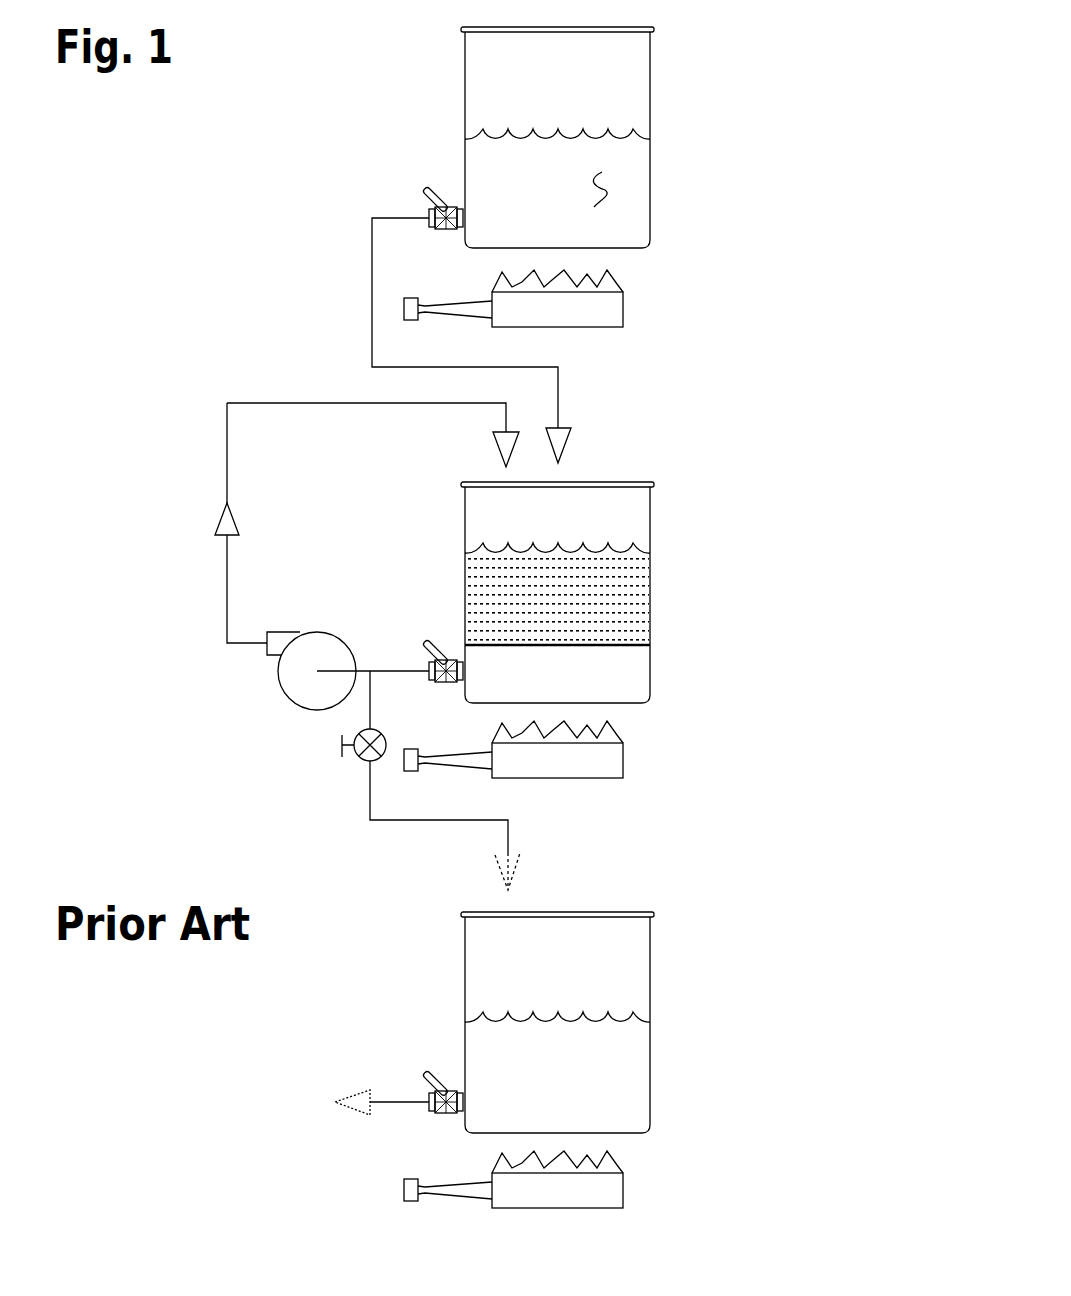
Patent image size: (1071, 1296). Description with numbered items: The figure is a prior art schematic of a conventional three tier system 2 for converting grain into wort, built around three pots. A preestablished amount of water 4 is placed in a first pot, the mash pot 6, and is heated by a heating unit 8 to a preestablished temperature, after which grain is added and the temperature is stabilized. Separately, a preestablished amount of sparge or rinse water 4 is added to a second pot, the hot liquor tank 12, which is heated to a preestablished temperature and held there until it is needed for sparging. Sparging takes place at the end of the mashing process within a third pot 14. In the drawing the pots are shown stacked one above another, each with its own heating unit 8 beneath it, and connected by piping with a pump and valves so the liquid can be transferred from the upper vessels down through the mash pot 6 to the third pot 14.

The 3 tier system 2 is at (690, 73).
The hot liquor tank 12 is at (465, 110).
The water 4 is at (605, 187).
The mash pot 6 is at (465, 538).
The heating unit 8 is at (603, 307).
The third pot 14 is at (465, 970).